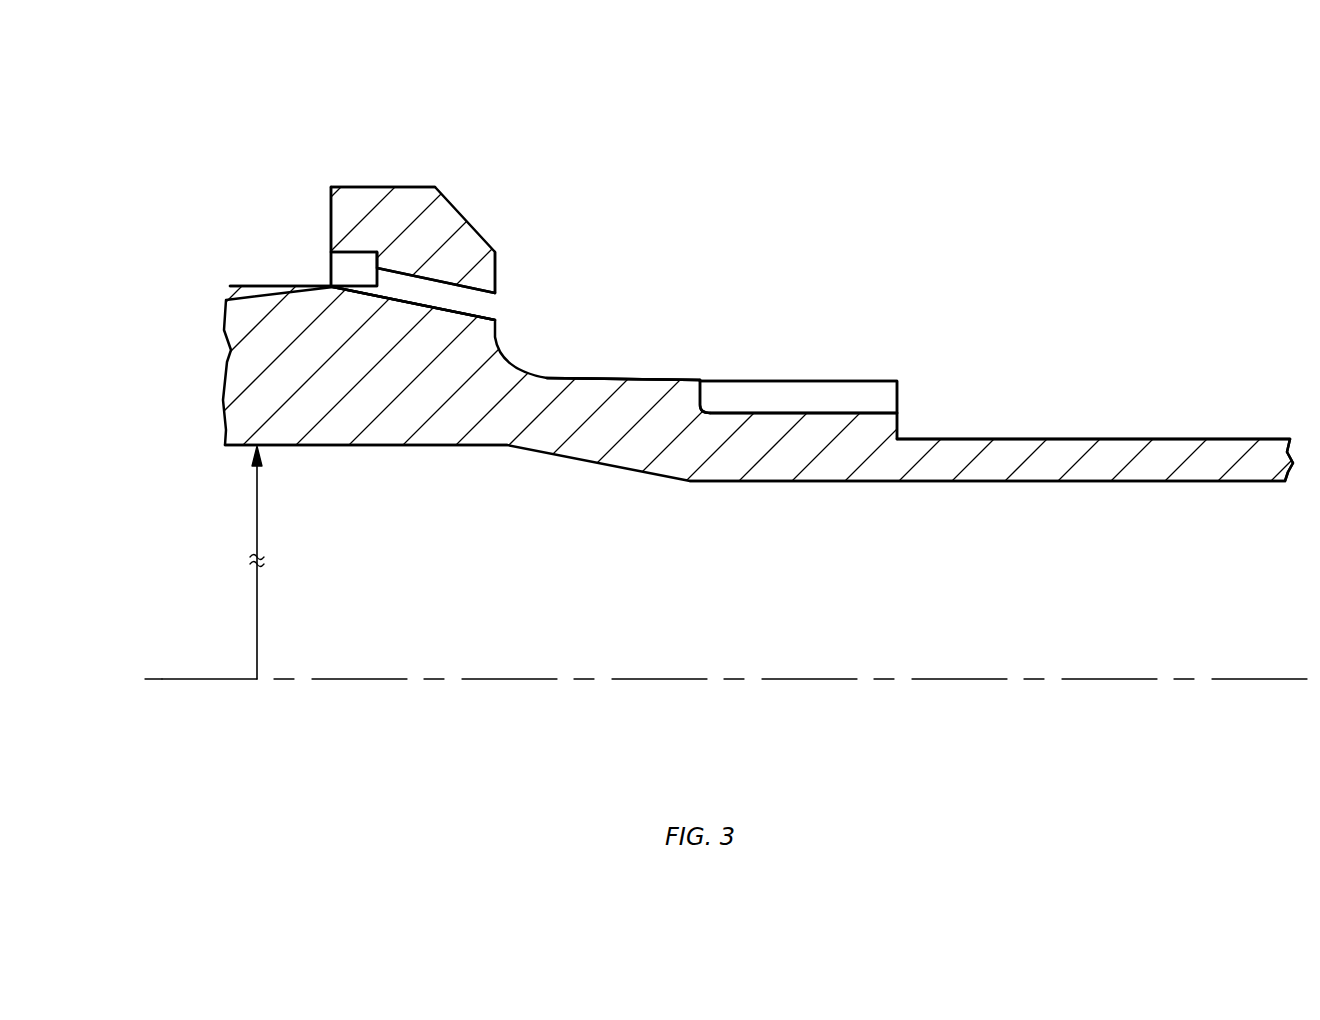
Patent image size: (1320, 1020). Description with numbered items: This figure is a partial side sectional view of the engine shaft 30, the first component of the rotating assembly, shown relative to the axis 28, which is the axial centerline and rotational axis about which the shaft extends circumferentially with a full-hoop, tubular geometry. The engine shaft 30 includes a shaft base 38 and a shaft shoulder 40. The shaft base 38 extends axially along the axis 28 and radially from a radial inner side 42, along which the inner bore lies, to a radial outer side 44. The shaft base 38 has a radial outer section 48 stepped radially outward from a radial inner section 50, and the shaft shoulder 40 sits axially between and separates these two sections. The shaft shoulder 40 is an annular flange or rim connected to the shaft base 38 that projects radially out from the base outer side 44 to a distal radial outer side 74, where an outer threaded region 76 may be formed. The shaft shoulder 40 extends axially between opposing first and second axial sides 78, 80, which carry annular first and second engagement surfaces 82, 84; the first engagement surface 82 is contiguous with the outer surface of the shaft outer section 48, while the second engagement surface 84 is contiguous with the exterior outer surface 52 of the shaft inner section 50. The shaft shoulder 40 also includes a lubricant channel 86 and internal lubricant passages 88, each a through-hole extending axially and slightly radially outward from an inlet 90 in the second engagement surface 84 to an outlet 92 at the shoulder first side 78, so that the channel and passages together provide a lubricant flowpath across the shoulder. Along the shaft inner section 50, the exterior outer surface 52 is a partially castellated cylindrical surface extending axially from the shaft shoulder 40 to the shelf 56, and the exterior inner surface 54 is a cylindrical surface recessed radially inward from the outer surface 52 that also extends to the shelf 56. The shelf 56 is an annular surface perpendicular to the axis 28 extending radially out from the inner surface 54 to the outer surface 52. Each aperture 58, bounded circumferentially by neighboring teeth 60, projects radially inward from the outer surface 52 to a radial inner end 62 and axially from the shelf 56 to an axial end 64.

The axis 28 is at (173, 681).
The engine shaft 30 is at (950, 84).
The shaft base 38 is at (335, 403).
The shaft shoulder 40 is at (432, 251).
The radial inner side 42 is at (230, 447).
The radial outer side 44 is at (230, 285).
The radial outer section 48 is at (235, 235).
The radial inner section 50 is at (1003, 320).
The exterior outer surface 52 is at (647, 378).
The exterior inner surface 54 is at (1117, 438).
The shelf 56 is at (898, 422).
The aperture 58 is at (800, 385).
The teeth 60 is at (752, 372).
The radial inner end 62 is at (835, 400).
The axial end 64 is at (707, 393).
The distal radial outer side 74 is at (407, 140).
The outer threaded region 76 is at (384, 187).
The first axial side 78 is at (265, 195).
The second axial side 80 is at (570, 260).
The first engagement surface 82 is at (331, 212).
The second engagement surface 84 is at (495, 270).
The lubricant channel 86 is at (365, 263).
The internal lubricant passage 88 is at (432, 293).
The inlet 90 is at (495, 307).
The outlet 92 is at (377, 278).